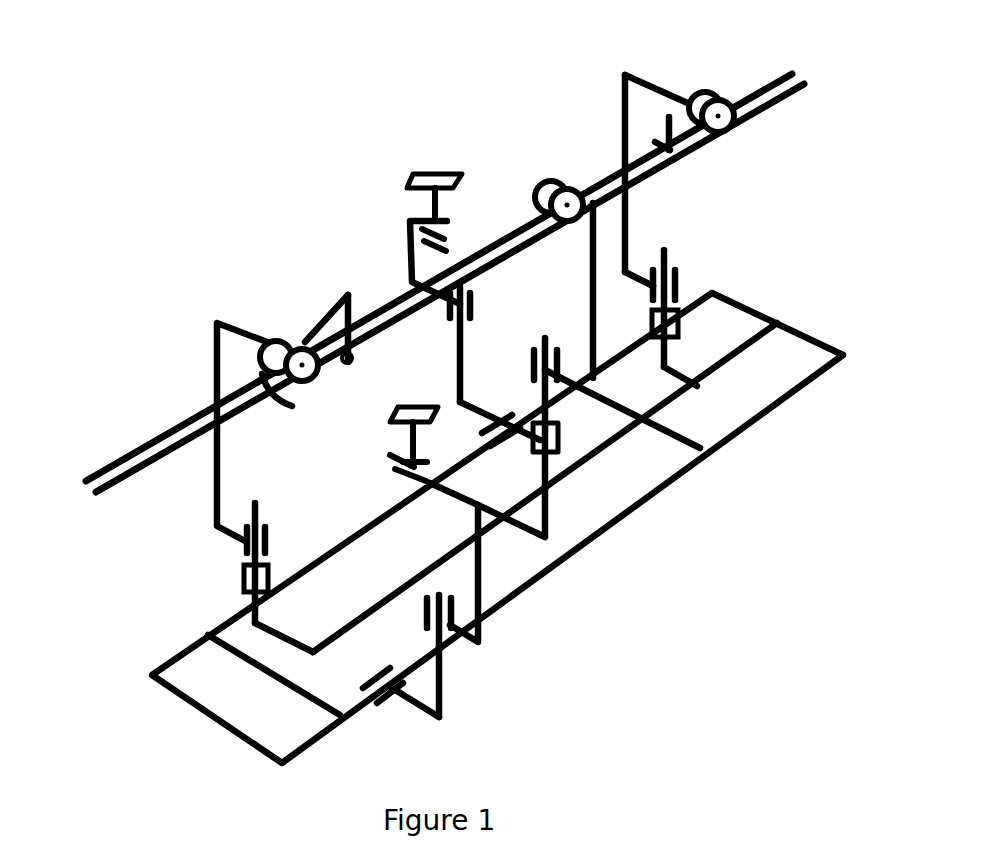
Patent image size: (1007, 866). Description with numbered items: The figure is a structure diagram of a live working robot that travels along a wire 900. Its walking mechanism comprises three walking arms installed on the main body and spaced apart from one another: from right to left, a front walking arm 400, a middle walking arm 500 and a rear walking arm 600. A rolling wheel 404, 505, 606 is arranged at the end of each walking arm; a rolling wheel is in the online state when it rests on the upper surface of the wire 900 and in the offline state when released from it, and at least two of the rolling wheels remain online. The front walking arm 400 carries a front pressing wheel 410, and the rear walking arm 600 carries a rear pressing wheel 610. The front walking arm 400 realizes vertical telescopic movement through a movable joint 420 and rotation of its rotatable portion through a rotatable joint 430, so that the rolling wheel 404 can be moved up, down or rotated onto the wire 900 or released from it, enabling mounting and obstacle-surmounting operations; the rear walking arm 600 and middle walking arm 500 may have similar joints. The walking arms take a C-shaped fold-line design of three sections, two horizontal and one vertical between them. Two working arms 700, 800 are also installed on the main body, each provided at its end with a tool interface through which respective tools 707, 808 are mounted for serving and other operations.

The wire 900 is at (135, 465).
The rear walking arm 600 is at (217, 388).
The rolling wheel 606 is at (285, 337).
The rear pressing wheel 610 is at (255, 377).
The working arm 700 is at (455, 385).
The tool 707 is at (432, 178).
The middle walking arm 500 is at (592, 318).
The rolling wheel 505 is at (562, 202).
The working arm 800 is at (483, 590).
The tool 808 is at (435, 422).
The front walking arm 400 is at (622, 148).
The front pressing wheel 410 is at (660, 135).
The rolling wheel 404 is at (700, 88).
The movable joint 420 is at (678, 282).
The rotatable joint 430 is at (680, 325).